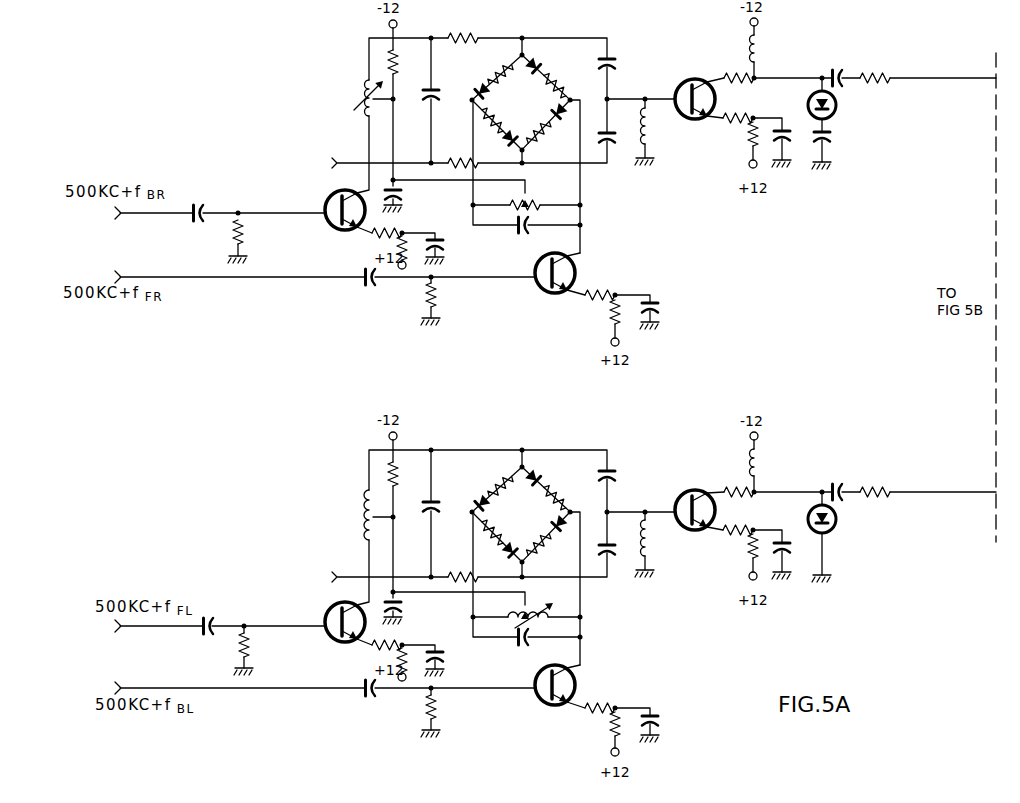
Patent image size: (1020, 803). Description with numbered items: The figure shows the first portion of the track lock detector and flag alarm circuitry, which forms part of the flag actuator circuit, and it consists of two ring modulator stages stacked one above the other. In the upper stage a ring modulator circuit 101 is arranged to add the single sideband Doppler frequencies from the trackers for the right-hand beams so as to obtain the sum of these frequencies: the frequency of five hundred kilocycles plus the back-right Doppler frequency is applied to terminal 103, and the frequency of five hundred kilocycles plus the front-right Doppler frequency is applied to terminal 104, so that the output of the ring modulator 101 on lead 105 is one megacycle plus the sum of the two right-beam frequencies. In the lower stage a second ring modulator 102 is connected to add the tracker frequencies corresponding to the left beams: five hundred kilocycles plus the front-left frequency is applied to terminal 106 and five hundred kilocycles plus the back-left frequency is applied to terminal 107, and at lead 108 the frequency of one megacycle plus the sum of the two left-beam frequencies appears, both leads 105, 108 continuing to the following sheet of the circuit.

The ring modulator circuit 101 is at (453, 211).
The second ring modulator 102 is at (455, 623).
The terminal 103 is at (124, 216).
The terminal 104 is at (123, 276).
The lead 105 is at (935, 77).
The terminal 106 is at (123, 628).
The terminal 107 is at (123, 687).
The lead 108 is at (918, 492).